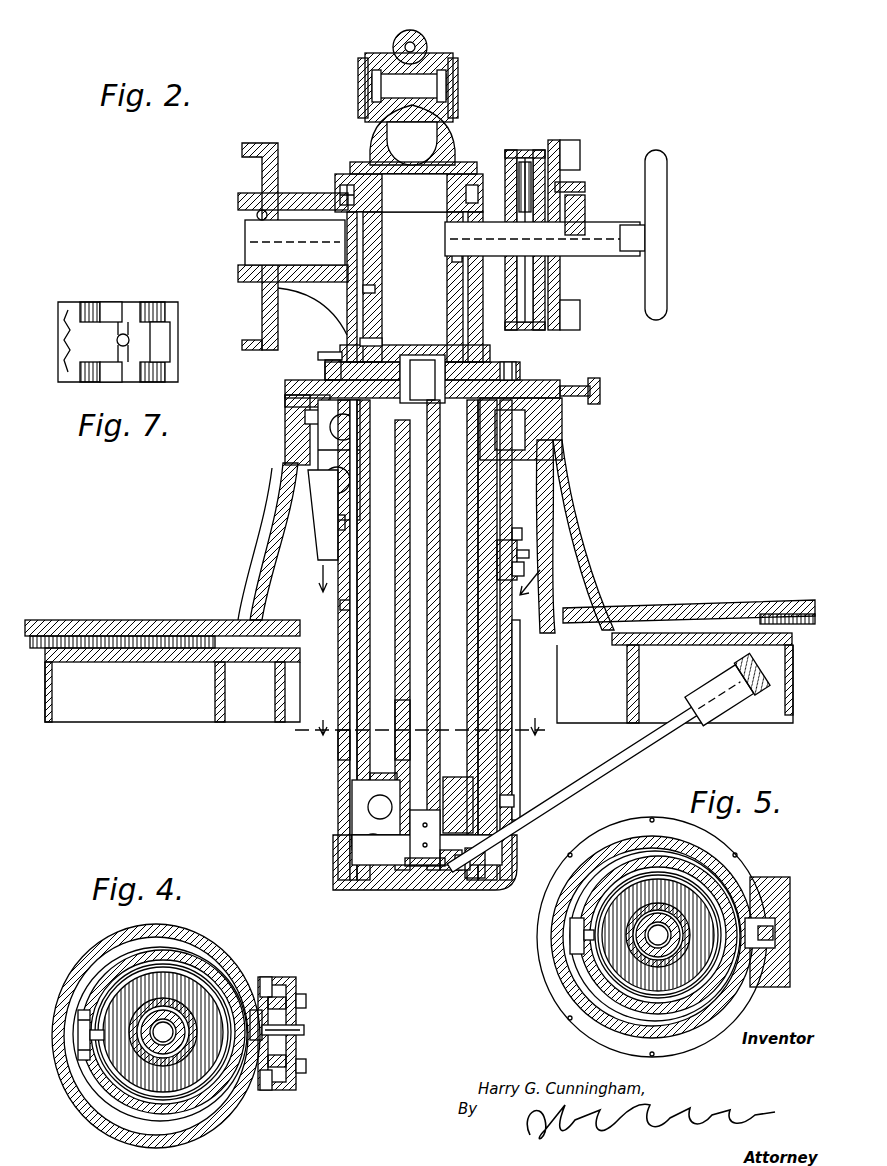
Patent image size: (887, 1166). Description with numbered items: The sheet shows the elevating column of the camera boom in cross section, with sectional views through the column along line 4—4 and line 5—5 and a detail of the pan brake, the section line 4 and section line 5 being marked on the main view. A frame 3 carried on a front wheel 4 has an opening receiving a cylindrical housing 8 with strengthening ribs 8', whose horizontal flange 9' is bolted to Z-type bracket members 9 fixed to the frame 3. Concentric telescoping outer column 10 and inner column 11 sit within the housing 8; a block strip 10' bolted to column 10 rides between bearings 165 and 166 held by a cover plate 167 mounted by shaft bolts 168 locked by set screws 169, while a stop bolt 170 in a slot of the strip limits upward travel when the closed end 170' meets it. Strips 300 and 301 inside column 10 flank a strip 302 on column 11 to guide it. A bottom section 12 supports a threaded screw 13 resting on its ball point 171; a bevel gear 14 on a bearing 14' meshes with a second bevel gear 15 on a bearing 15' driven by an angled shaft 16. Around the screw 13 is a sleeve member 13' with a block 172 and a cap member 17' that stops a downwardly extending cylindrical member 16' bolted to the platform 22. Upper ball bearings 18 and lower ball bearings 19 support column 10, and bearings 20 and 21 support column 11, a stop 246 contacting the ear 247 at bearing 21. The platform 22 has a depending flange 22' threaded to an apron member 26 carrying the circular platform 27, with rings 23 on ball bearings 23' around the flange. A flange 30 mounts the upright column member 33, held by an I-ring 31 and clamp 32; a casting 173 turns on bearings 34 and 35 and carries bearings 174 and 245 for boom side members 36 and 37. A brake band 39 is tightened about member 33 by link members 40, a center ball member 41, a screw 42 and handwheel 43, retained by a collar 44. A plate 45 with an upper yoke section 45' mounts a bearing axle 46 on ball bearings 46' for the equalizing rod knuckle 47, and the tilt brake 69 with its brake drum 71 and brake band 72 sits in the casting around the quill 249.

In FIG. 2, the frame 3 is at (122, 661).
In FIG. 2, the front wheel 4 is at (428, 587).
In FIG. 2, the section line 5- 5 is at (420, 720).
In FIG. 2, the cylindrical housing 8 is at (337, 640).
In FIG. 4, the cylindrical housing 8 is at (156, 1031).
In FIG. 5, the cylindrical housing 8 is at (652, 918).
In FIG. 2, the strengthening ribs 8' is at (514, 640).
In FIG. 5, the strengthening ribs 8' is at (652, 936).
In FIG. 2, the Z-type bracket members 9 is at (423, 536).
In FIG. 2, the horizontal flange 9' is at (321, 516).
In FIG. 2, the outer column member 10 is at (390, 640).
In FIG. 4, the outer column member 10 is at (138, 1026).
In FIG. 5, the outer column member 10 is at (628, 925).
In FIG. 2, the block strip 10' is at (504, 555).
In FIG. 4, the block strip 10' is at (293, 1019).
In FIG. 5, the block strip 10' is at (768, 921).
In FIG. 2, the inner column member 11 is at (360, 680).
In FIG. 4, the inner column member 11 is at (115, 975).
In FIG. 5, the inner column member 11 is at (605, 872).
In FIG. 2, the bottom section 12 is at (360, 890).
In FIG. 2, the threaded screw 13 is at (445, 635).
In FIG. 4, the threaded screw 13 is at (170, 1018).
In FIG. 5, the threaded screw 13 is at (669, 927).
In FIG. 2, the cylindrical sleeve member 13' is at (390, 724).
In FIG. 4, the cylindrical sleeve member 13' is at (163, 1020).
In FIG. 5, the cylindrical sleeve member 13' is at (658, 922).
In FIG. 2, the bevel gear 14 is at (405, 866).
In FIG. 2, the bearing 14' is at (418, 892).
In FIG. 2, the second bevel gear 15 is at (480, 879).
In FIG. 2, the bearing 15' is at (461, 886).
In FIG. 2, the shaft 16 is at (605, 768).
In FIG. 2, the downwardly extending cylindrical member 16' is at (389, 645).
In FIG. 2, the cap member 17' is at (423, 379).
In FIG. 2, the upper ball bearing 18 is at (324, 482).
In FIG. 2, the lower ball bearing 19 is at (358, 850).
In FIG. 2, the bearing 20 is at (330, 392).
In FIG. 2, the bearing 21 is at (386, 773).
In FIG. 2, the cylindrical platform 22 is at (416, 375).
In FIG. 2, the depending flange 22' is at (408, 429).
In FIG. 2, the rings 23 is at (272, 430).
In FIG. 2, the ball bearings 23' is at (287, 406).
In FIG. 2, the apron member 26 is at (270, 536).
In FIG. 2, the circular platform 27 is at (118, 618).
In FIG. 2, the flange 30 is at (328, 366).
In FIG. 2, the I-ring 31 is at (332, 352).
In FIG. 2, the clamp 32 is at (516, 380).
In FIG. 2, the upright cylindrical column member 33 is at (378, 336).
In FIG. 2, the bearing 34 is at (456, 190).
In FIG. 2, the bearing 35 is at (385, 352).
In FIG. 2, the boom side member 36 is at (273, 148).
In FIG. 2, the boom side member 37 is at (565, 142).
In FIG. 2, the brake band 39 is at (380, 226).
In FIG. 7, the brake band 39 is at (158, 302).
In FIG. 2, the link members 40 is at (452, 238).
In FIG. 7, the link members 40 is at (110, 302).
In FIG. 7, the center ball member 41 is at (125, 334).
In FIG. 2, the screw 42 is at (455, 256).
In FIG. 2, the handwheel 43 is at (660, 160).
In FIG. 2, the collar 44 is at (375, 290).
In FIG. 2, the plate 45 is at (402, 155).
In FIG. 2, the upper yoke section 45' is at (432, 128).
In FIG. 2, the bearing axle 46 is at (394, 87).
In FIG. 2, the ball bearings 46' is at (411, 83).
In FIG. 2, the equalizing rod knuckle 47 is at (427, 38).
In FIG. 2, the tilt brake 69 is at (524, 162).
In FIG. 2, the brake drum 71 is at (510, 150).
In FIG. 2, the brake band 72 is at (530, 158).
In FIG. 4, the bearing 165 is at (288, 1082).
In FIG. 4, the bearing 166 is at (285, 977).
In FIG. 2, the cover plate 167 is at (526, 575).
In FIG. 4, the cover plate 167 is at (296, 990).
In FIG. 4, the shaft bolts 168 is at (306, 1000).
In FIG. 4, the set screws 169 is at (268, 977).
In FIG. 2, the stop bolt 170 is at (559, 540).
In FIG. 4, the stop bolt 170 is at (307, 1028).
In FIG. 2, the closed end 170' is at (531, 795).
In FIG. 5, the closed end 170' is at (794, 898).
In FIG. 2, the ball point 171 is at (436, 878).
In FIG. 2, the block 172 is at (354, 838).
In FIG. 2, the casting 173 is at (340, 192).
In FIG. 2, the bearing 174 is at (240, 210).
In FIG. 2, the bearing 245 is at (580, 192).
In FIG. 2, the stop 246 is at (345, 606).
In FIG. 2, the ear 247 is at (354, 797).
In FIG. 2, the quill 249 is at (576, 222).
In FIG. 2, the strip 300 is at (340, 735).
In FIG. 4, the strip 300 is at (82, 1000).
In FIG. 5, the strip 300 is at (575, 903).
In FIG. 4, the strip 301 is at (84, 1100).
In FIG. 5, the strip 301 is at (577, 945).
In FIG. 4, the strip 302 is at (78, 1055).
In FIG. 5, the strip 302 is at (570, 930).